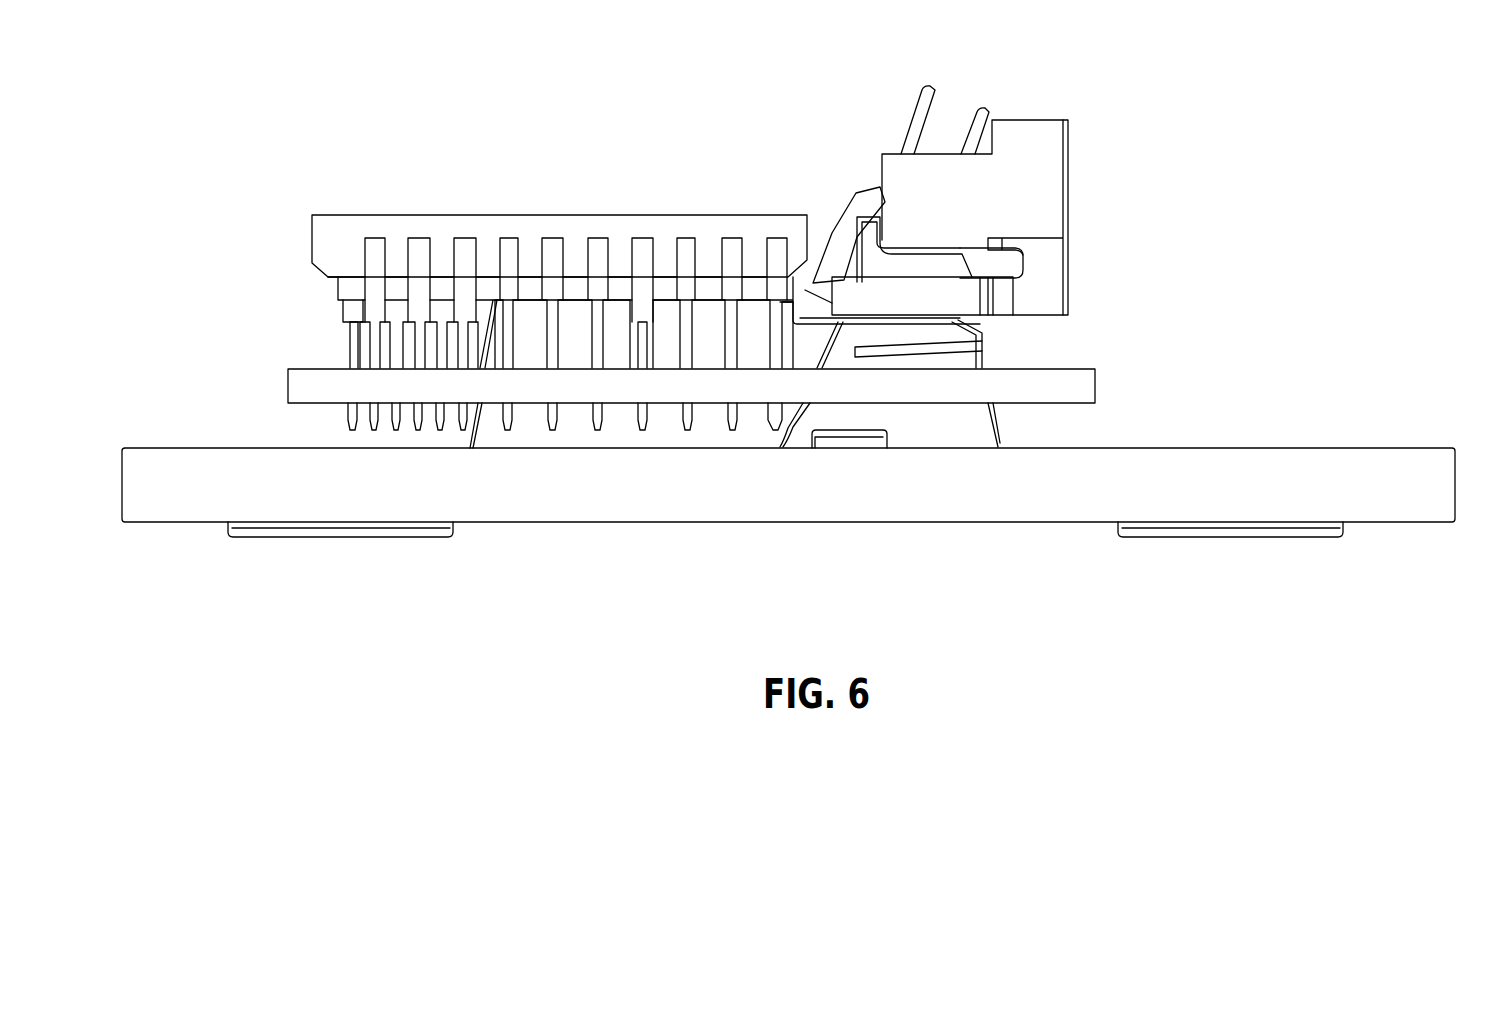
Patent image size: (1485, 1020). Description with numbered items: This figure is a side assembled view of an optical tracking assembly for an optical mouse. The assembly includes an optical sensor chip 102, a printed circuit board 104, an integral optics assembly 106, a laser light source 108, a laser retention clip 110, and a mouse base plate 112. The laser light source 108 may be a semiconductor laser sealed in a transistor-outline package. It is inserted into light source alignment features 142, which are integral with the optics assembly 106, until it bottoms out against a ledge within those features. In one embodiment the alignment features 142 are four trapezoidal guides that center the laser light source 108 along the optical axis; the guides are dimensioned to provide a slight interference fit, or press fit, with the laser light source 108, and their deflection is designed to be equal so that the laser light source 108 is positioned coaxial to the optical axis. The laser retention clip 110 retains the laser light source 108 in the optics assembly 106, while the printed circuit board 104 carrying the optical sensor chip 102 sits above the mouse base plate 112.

The optical sensor chip 102 is at (590, 213).
The printed circuit board 104 is at (1095, 390).
The integral optics assembly 106 is at (990, 353).
The laser light source 108 is at (857, 185).
The laser retention clip 110 is at (1068, 143).
The mouse base plate 112 is at (1307, 448).
The light source alignment features 142 is at (830, 232).